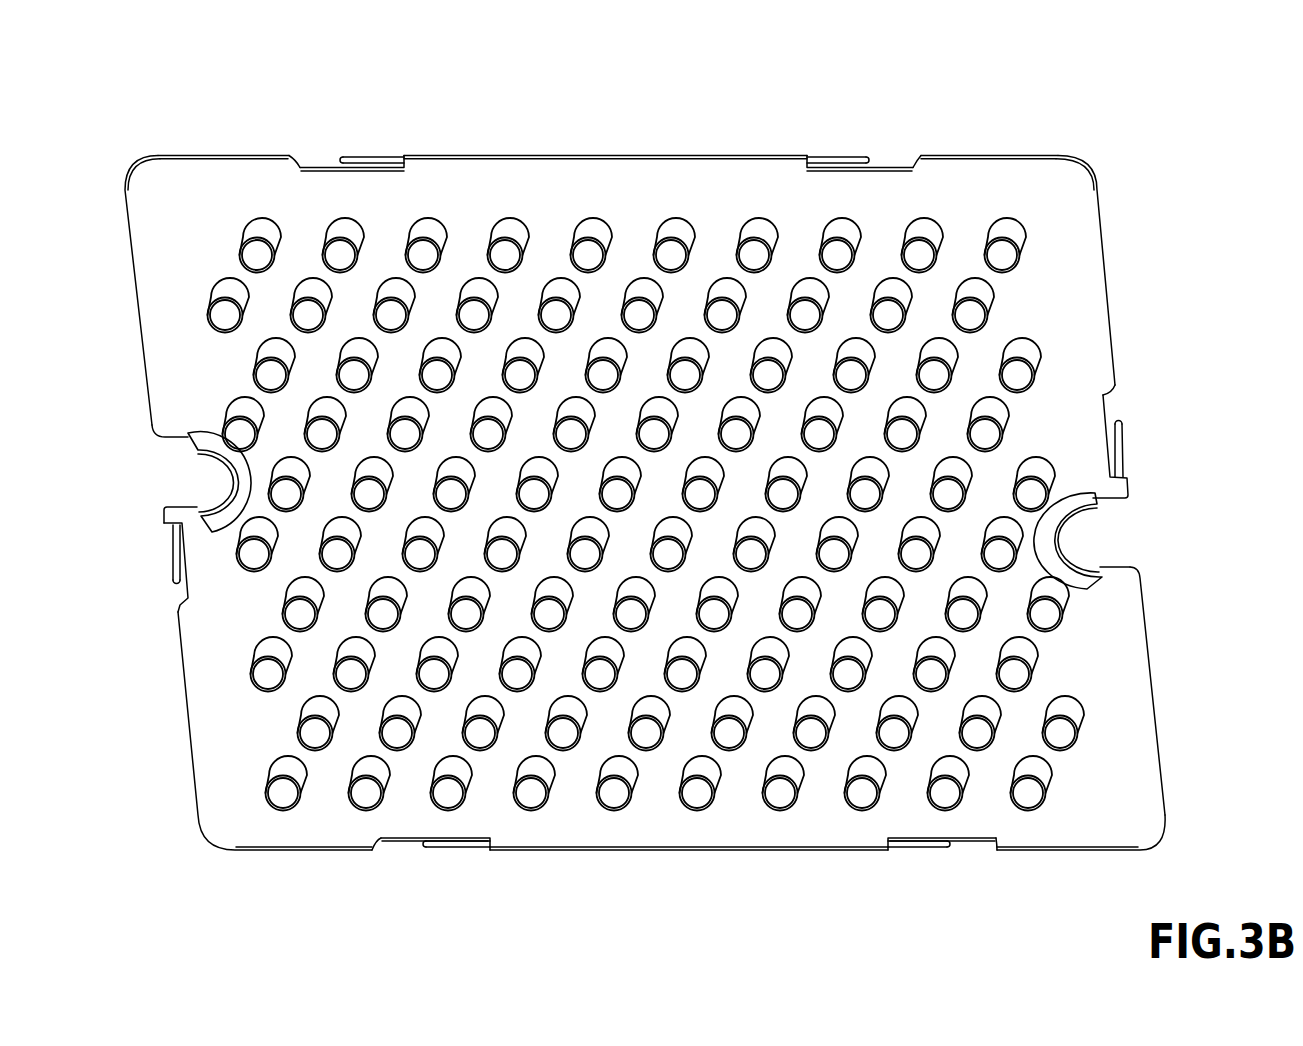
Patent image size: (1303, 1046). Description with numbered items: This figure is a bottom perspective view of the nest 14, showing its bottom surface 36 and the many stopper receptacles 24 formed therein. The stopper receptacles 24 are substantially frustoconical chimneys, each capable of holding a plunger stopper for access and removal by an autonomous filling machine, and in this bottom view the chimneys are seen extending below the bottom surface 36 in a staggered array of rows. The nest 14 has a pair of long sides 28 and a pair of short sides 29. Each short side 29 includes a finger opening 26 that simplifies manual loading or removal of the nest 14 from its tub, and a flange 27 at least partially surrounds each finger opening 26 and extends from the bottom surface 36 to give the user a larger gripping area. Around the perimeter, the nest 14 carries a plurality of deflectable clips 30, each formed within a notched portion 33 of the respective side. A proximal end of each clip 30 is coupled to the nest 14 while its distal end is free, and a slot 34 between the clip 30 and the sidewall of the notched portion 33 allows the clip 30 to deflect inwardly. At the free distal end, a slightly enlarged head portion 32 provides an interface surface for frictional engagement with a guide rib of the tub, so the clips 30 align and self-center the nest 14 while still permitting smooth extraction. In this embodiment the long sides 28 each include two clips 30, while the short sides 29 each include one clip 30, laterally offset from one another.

The nest 14 is at (90, 110).
The stopper receptacles 24 is at (298, 728).
The finger opening 26 is at (158, 447).
The flange 27 is at (210, 467).
The long sides 28 is at (600, 155).
The short sides 29 is at (1160, 683).
The deflectable clips 30 is at (392, 158).
The head portion 32 is at (345, 155).
The notched portion 33 is at (304, 170).
The slot 34 is at (323, 156).
The bottom surface 36 is at (184, 230).